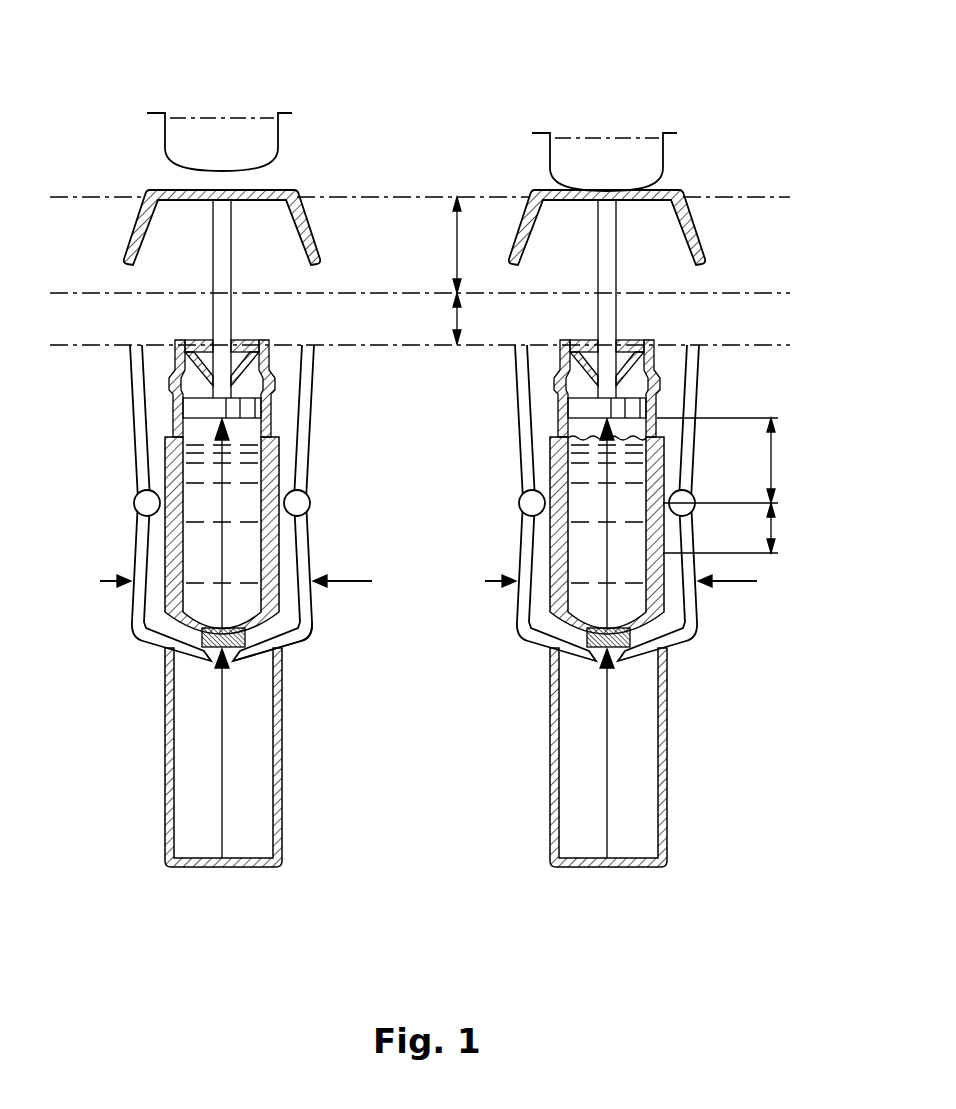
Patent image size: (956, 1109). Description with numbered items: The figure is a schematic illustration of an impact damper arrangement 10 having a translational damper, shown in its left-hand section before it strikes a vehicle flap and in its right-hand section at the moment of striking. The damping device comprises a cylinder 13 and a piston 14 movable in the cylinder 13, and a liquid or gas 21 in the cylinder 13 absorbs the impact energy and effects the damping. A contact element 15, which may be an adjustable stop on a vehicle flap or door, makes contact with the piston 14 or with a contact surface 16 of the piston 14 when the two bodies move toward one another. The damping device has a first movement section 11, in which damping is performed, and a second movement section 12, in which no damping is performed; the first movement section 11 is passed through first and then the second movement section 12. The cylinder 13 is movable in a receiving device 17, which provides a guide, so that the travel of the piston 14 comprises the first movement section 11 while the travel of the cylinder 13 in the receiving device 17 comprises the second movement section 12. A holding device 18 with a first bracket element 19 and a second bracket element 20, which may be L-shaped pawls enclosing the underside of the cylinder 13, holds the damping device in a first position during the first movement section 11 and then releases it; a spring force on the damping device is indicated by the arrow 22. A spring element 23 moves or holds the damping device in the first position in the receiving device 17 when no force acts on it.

The impact damper arrangement 10 is at (67, 36).
The first movement section 11 is at (455, 242).
The second movement section 12 is at (455, 316).
The cylinder 13 is at (178, 430).
The piston 14 is at (195, 408).
The contact element 15 is at (187, 134).
The contact surface 16 is at (292, 190).
The receiving device 17 is at (167, 792).
The holding device 18 is at (124, 651).
The first bracket element 19 is at (137, 617).
The second bracket element 20 is at (313, 625).
The liquid or gas 21 is at (250, 552).
The arrow 22 is at (97, 568).
The spring element 23 is at (223, 748).